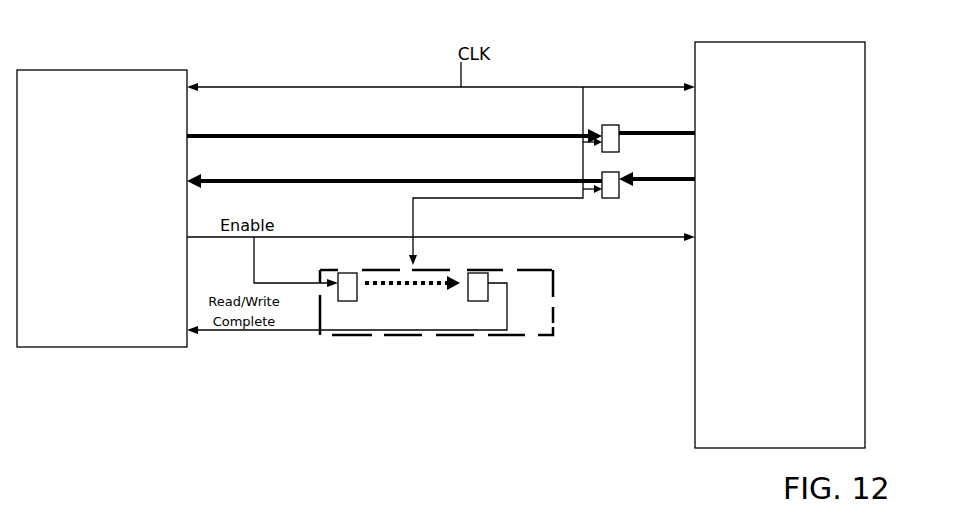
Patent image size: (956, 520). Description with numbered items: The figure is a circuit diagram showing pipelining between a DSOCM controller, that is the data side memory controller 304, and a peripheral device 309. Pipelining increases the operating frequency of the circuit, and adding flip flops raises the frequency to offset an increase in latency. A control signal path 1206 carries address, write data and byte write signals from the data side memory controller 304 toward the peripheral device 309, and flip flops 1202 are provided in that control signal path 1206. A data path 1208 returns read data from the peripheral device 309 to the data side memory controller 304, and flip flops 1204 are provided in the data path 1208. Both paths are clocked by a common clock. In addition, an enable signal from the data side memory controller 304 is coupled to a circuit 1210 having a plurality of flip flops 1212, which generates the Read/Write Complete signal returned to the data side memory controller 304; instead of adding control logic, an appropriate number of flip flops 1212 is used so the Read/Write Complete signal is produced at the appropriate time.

The data side memory controller 304 is at (107, 70).
The peripheral device 309 is at (717, 42).
The flip flops 1202 is at (608, 125).
The flip flops 1204 is at (608, 172).
The control signal path 1206 is at (497, 130).
The data path 1208 is at (485, 177).
The circuit 1210 is at (438, 272).
The flip flops 1212 is at (348, 272).